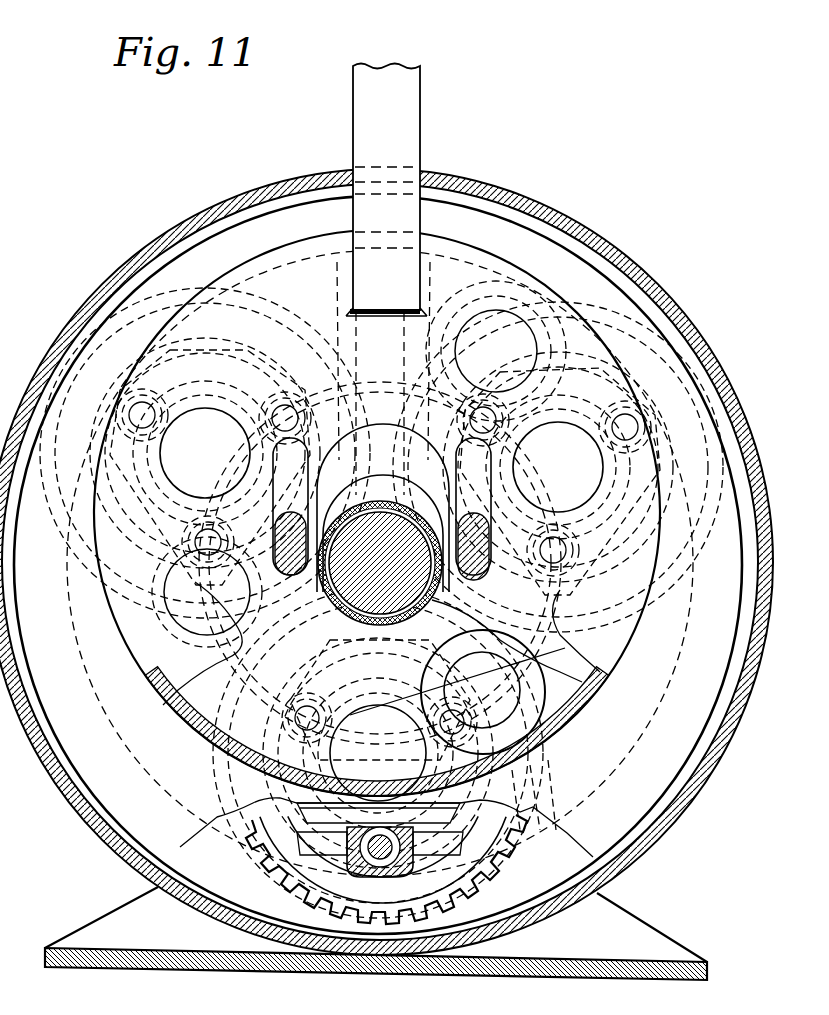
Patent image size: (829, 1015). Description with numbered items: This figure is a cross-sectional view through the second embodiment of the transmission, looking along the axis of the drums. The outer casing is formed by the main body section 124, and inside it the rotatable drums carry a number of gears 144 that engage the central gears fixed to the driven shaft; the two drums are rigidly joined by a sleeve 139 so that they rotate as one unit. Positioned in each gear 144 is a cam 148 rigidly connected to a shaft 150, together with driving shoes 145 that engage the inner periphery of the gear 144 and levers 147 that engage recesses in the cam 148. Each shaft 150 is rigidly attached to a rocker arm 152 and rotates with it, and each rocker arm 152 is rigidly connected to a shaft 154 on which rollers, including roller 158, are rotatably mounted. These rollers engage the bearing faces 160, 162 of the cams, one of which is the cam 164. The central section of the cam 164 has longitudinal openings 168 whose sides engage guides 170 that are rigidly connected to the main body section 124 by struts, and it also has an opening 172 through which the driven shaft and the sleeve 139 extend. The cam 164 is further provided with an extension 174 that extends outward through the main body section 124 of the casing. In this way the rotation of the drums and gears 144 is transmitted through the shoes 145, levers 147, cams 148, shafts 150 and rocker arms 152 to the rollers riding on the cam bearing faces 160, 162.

The main body section 124 is at (128, 854).
The sleeve 139 is at (448, 604).
The gears 144 is at (274, 884).
The driving shoes 145 is at (432, 865).
The levers 147 is at (347, 846).
The cams 148 is at (640, 514).
The shafts 150 is at (378, 753).
The rocker arms 152 is at (520, 771).
The shaft 154 is at (472, 677).
The roller 158 is at (522, 689).
The bearing face 160 is at (352, 393).
The bearing face 162 is at (214, 698).
The cam 164 is at (400, 385).
The longitudinal openings 168 is at (456, 438).
The guides 170 is at (490, 589).
The opening 172 is at (392, 430).
The extension 174 is at (364, 125).